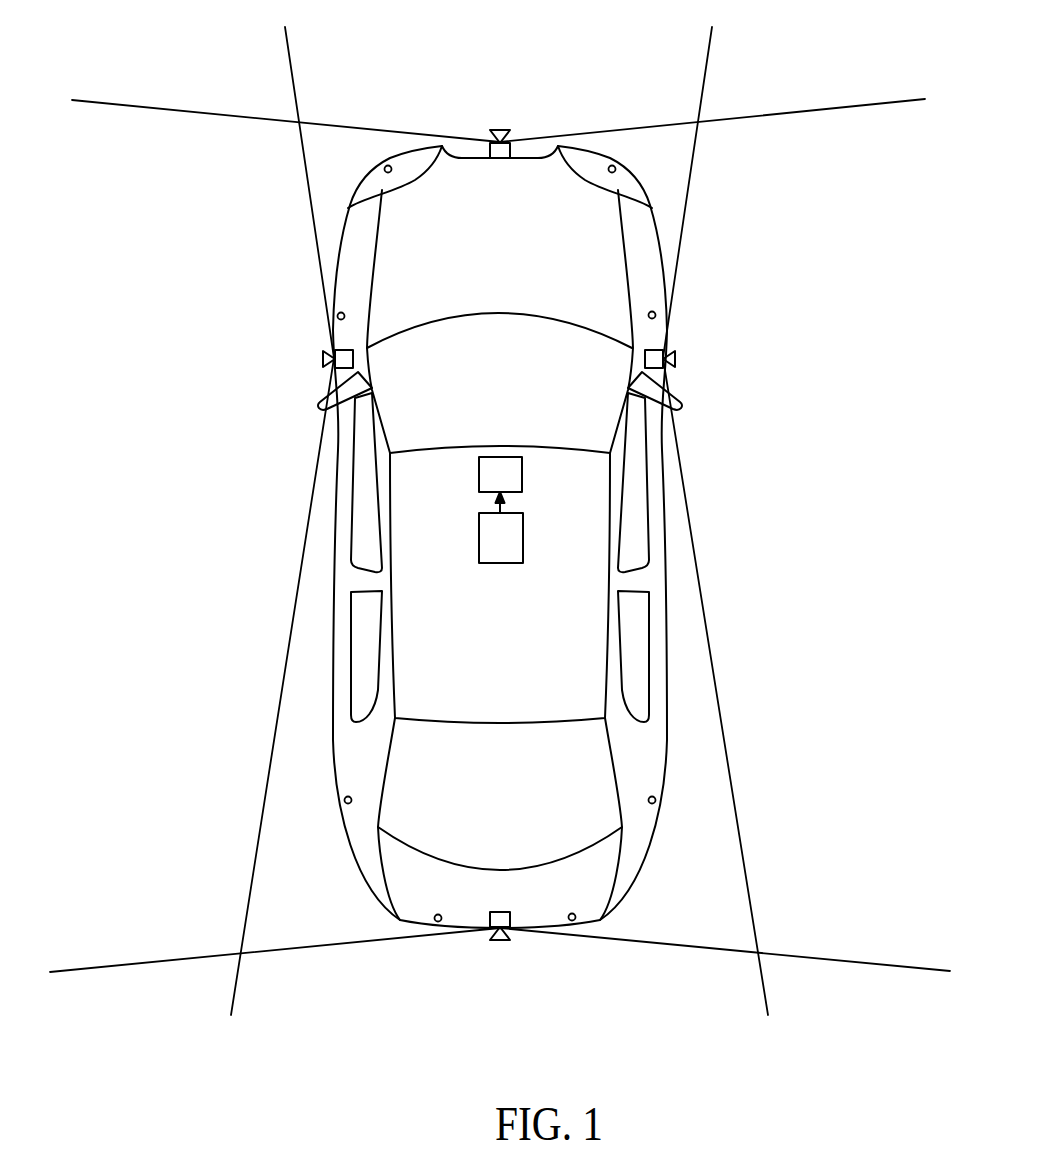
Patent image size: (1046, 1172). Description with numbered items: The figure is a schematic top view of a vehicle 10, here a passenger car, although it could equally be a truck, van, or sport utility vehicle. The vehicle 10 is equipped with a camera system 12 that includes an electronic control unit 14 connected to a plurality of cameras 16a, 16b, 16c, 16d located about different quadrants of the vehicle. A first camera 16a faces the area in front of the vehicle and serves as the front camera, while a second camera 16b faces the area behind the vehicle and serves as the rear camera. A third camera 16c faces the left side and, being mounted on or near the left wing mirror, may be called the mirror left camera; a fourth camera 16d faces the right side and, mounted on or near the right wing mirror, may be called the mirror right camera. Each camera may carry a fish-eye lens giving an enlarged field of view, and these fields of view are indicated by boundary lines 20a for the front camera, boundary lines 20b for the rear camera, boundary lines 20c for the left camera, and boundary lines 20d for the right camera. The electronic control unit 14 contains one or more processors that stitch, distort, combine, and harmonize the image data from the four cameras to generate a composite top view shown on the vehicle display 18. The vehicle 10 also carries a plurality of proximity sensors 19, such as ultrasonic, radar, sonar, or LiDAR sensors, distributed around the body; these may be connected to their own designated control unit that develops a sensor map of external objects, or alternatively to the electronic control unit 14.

The vehicle 10 is at (496, 532).
The camera system 12 is at (425, 487).
The electronic control unit 14 is at (523, 538).
The first camera 16a is at (492, 150).
The second camera 16b is at (503, 918).
The third camera 16c is at (333, 348).
The fourth camera 16d is at (664, 348).
The vehicle display 18 is at (523, 474).
The proximity sensors 19 is at (615, 166).
The boundary lines 20a is at (167, 110).
The boundary lines 20b is at (149, 962).
The boundary lines 20c is at (290, 50).
The boundary lines 20d is at (712, 53).